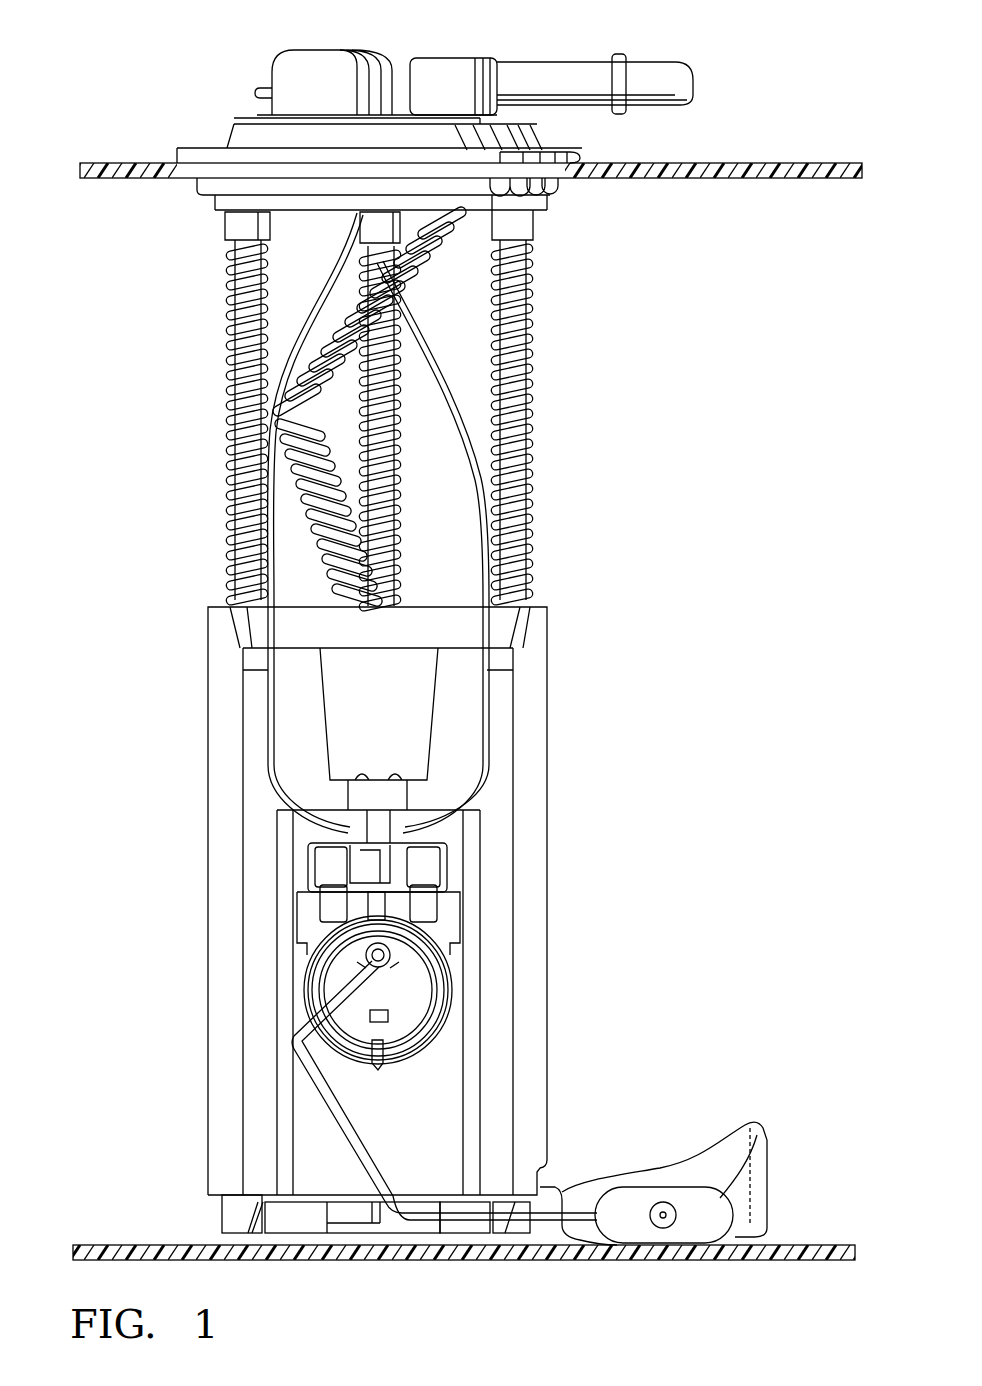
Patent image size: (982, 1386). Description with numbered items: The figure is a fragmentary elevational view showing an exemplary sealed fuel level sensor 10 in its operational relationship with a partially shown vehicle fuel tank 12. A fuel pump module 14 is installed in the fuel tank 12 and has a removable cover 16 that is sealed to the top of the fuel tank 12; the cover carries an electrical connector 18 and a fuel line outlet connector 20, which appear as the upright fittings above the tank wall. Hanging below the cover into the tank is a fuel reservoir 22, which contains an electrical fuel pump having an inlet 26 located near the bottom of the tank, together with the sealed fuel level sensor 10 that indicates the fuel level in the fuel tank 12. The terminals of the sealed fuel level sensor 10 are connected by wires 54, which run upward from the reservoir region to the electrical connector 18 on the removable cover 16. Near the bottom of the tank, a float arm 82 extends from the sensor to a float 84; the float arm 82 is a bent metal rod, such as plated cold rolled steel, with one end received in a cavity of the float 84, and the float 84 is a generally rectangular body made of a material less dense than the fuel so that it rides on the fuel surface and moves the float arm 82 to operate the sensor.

The sealed fuel level sensor 10 is at (440, 937).
The fuel tank 12 is at (790, 163).
The fuel pump module 14 is at (240, 118).
The removable cover 16 is at (493, 187).
The electrical connector 18 is at (320, 60).
The fuel line outlet connector 20 is at (652, 78).
The fuel reservoir 22 is at (208, 873).
The inlet 26 is at (343, 1223).
The wires 54 is at (265, 683).
The float arm 82 is at (566, 1190).
The float 84 is at (768, 1153).